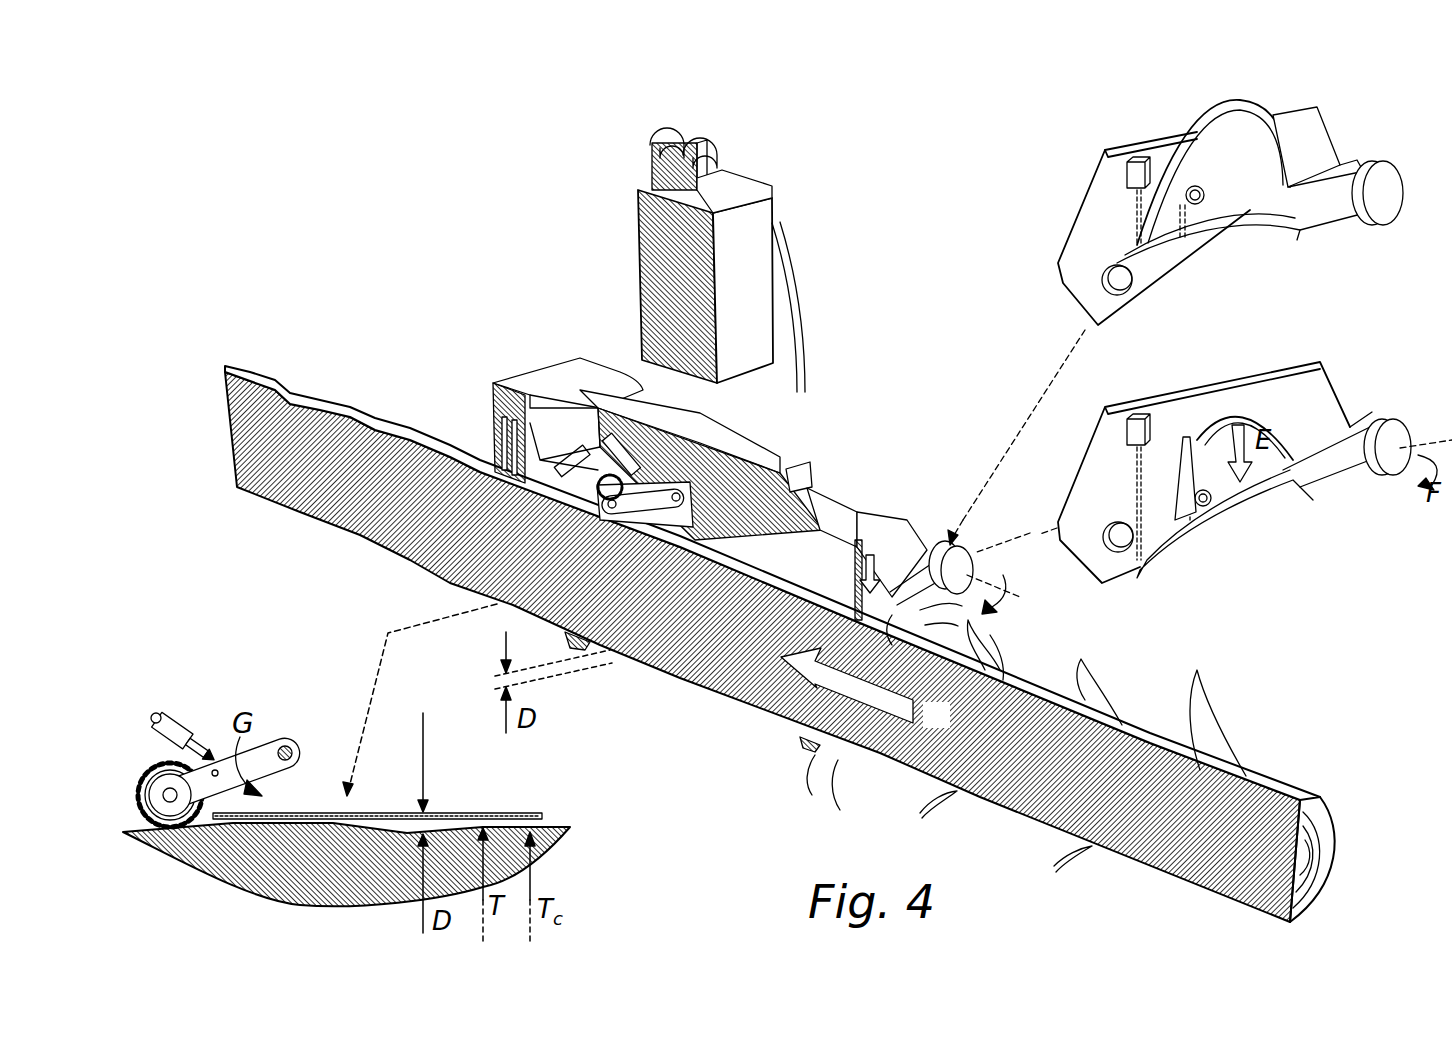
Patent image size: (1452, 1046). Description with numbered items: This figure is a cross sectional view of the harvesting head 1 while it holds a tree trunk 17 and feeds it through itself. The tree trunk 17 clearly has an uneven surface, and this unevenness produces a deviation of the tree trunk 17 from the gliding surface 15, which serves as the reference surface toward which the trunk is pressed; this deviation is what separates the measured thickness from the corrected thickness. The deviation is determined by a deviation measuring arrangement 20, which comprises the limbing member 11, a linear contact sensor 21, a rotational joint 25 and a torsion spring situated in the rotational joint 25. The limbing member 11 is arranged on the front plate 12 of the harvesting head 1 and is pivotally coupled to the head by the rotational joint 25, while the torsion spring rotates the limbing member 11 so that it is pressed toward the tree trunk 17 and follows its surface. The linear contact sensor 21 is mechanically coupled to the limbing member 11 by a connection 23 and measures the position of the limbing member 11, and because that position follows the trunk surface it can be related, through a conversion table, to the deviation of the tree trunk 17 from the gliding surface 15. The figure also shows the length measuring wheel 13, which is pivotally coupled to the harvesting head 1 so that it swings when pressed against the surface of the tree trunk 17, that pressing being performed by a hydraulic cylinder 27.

The harvesting head 1 is at (845, 170).
The limbing member 11 is at (1262, 215).
The front plate 12 is at (1303, 125).
The length measuring wheel 13 is at (150, 770).
The gliding surface 15 is at (317, 813).
The tree trunk 17 is at (1277, 787).
The deviation measuring arrangement 20 is at (1066, 134).
The linear contact sensor 21 is at (1148, 160).
The connection 23 is at (1128, 208).
The rotational joint 25 is at (1390, 160).
The hydraulic cylinder 27 is at (183, 716).